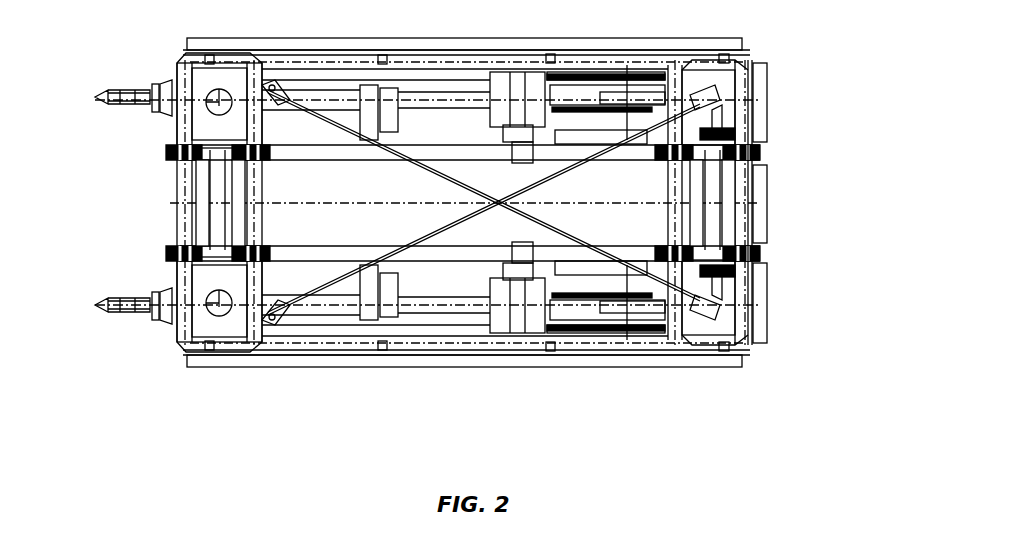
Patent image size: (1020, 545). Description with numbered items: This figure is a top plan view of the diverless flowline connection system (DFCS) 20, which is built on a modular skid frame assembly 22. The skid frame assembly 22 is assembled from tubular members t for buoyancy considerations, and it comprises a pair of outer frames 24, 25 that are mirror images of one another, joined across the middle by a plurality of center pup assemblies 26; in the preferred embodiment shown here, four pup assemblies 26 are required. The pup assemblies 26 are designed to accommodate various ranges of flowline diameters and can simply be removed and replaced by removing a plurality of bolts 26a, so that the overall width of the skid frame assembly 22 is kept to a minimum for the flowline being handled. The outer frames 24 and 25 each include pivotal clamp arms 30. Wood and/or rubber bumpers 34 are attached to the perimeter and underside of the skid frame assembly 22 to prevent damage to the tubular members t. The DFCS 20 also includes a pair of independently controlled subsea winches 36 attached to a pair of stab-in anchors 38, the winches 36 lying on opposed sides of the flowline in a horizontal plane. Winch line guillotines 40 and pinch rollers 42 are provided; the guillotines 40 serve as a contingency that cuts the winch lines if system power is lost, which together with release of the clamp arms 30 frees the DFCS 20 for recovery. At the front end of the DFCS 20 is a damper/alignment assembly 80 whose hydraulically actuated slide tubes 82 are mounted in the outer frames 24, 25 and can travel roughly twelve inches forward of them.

The diverless flowline connection system 20 is at (115, 56).
The modular skid frame assembly 22 is at (175, 230).
The outer frame 24 is at (745, 98).
The outer frame 25 is at (748, 312).
The center pup assembly 26 is at (178, 170).
The bolts 26a is at (165, 250).
The pivotal clamp arm 30 is at (180, 205).
The bumpers 34 is at (450, 46).
The winch 36 is at (640, 72).
The stab-in anchor 38 is at (118, 97).
The winch line guillotine 40 is at (396, 300).
The pinch roller 42 is at (402, 310).
The damper/alignment assembly 80 is at (156, 90).
The slide tube 82 is at (170, 90).
The tubular member t is at (310, 60).